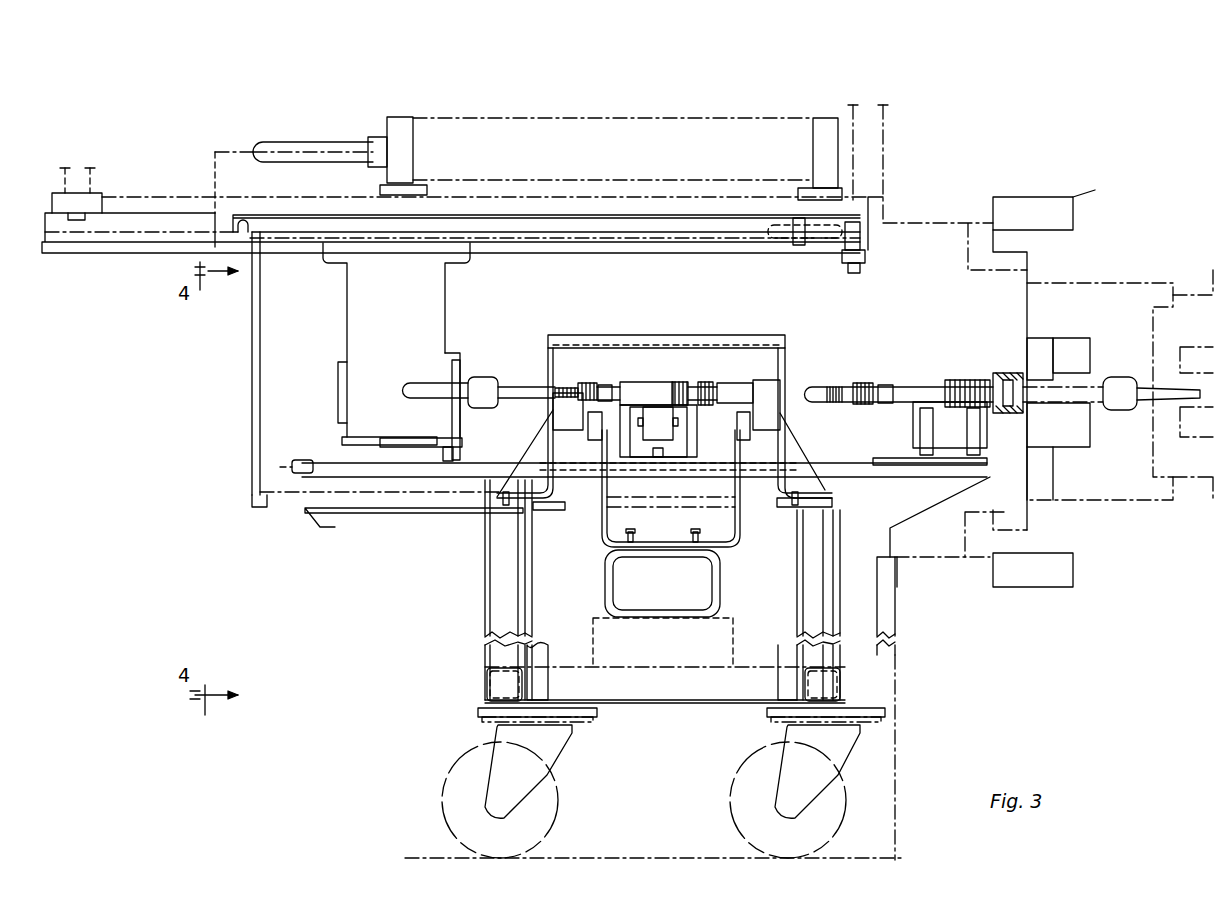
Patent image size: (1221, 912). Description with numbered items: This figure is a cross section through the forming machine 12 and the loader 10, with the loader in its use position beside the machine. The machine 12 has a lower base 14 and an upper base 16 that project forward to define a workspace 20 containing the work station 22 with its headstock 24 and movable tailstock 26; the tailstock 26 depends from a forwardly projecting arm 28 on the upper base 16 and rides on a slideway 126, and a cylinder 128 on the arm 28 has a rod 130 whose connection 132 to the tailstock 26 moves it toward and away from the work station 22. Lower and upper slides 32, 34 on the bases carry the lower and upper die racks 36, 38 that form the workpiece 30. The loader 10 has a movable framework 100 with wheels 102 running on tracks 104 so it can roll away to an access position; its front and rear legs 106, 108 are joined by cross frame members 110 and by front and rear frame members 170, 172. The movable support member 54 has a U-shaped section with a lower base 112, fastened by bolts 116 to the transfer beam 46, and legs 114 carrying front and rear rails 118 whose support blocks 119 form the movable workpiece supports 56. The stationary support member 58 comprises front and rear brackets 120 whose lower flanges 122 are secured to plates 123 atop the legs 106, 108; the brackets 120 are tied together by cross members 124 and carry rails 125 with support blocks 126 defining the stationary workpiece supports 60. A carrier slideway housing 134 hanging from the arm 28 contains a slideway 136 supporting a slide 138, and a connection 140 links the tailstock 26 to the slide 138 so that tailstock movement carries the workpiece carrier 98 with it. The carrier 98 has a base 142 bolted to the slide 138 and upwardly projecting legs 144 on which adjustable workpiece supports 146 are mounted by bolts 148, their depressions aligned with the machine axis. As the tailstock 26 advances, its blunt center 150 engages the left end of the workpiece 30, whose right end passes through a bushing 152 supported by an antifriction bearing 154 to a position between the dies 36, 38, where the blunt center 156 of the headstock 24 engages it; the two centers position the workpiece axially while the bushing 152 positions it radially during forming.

The loader 10 is at (548, 618).
The forming machine 12 is at (902, 778).
The lower base 14 is at (905, 750).
The upper base 16 is at (905, 217).
The workspace 20 is at (845, 293).
The work station 22 is at (962, 340).
The headstock 24 is at (1207, 280).
The tailstock 26 is at (355, 340).
The arm 28 is at (140, 254).
The workpiece 30 is at (652, 383).
The lower slide 32 is at (1098, 478).
The upper slide 34 is at (1030, 297).
The lower rack 36 is at (1043, 437).
The upper rack 38 is at (1037, 342).
The transfer beam 46 is at (603, 574).
The movable support member 54 is at (603, 550).
The movable workpiece supports 56 is at (583, 417).
The stationary support member 58 is at (785, 357).
The stationary workpiece supports 60 is at (763, 373).
The workpiece carrier 98 is at (707, 399).
The movable framework 100 is at (487, 563).
The wheels 102 is at (770, 752).
The tracks 104 is at (600, 857).
The front frame leg 106 is at (495, 538).
The rear frame leg 108 is at (828, 572).
The cross frame members 110 is at (667, 692).
The lower base 112 is at (673, 548).
The legs 114 is at (730, 482).
The bolts 116 is at (703, 535).
The rails 118 is at (597, 447).
The support blocks 119 is at (594, 440).
The brackets 120 is at (548, 370).
The lower flanges 122 is at (530, 500).
The plates 123 is at (548, 507).
The cross members 124 is at (563, 333).
The rails 125 is at (585, 413).
The support blocks 126 is at (285, 243).
The cylinder 128 is at (605, 118).
The rod 130 is at (278, 141).
The connection 132 is at (213, 160).
The carrier slideway housing 134 is at (252, 345).
The slideway 136 is at (427, 485).
The slide 138 is at (358, 470).
The connection 140 is at (443, 443).
The base 142 is at (678, 458).
The legs 144 is at (677, 443).
The adjustable workpiece supports 146 is at (622, 390).
The bolts 148 is at (637, 447).
The blunt center 150 is at (528, 383).
The bushing 152 is at (998, 372).
The antifriction bearing 154 is at (977, 478).
The blunt center 156 is at (1090, 400).
The front frame member 170 is at (518, 597).
The rear frame member 172 is at (800, 603).